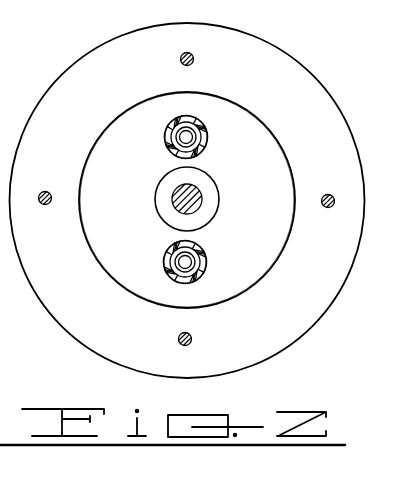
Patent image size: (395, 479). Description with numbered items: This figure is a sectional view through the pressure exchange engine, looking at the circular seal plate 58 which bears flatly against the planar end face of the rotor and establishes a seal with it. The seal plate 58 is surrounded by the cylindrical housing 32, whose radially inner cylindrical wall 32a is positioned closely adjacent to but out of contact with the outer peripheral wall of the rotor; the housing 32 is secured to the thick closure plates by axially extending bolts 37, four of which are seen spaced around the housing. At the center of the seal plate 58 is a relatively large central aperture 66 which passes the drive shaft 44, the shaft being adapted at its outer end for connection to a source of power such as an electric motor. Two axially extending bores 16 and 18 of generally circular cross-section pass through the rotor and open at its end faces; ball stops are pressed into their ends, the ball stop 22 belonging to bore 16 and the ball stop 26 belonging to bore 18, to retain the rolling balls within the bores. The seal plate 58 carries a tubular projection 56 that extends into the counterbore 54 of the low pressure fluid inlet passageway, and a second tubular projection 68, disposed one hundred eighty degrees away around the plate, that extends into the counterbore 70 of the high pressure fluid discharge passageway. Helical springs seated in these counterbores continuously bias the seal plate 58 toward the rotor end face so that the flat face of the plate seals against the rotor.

The axially extending bore 16 is at (193, 262).
The axially extending bore 18 is at (181, 139).
The ball stop 22 is at (197, 251).
The ball stop 26 is at (199, 130).
The cylindrical housing 32 is at (251, 70).
The radially inner cylindrical wall 32a is at (123, 112).
The axially extending bolts 37 is at (180, 54).
The drive shaft 44 is at (178, 193).
The counterbore 54 is at (188, 279).
The tubular projection 56 is at (170, 262).
The circular seal plate 58 is at (121, 211).
The central aperture 66 is at (206, 185).
The second tubular projection 68 is at (172, 128).
The counterbore 70 is at (200, 145).